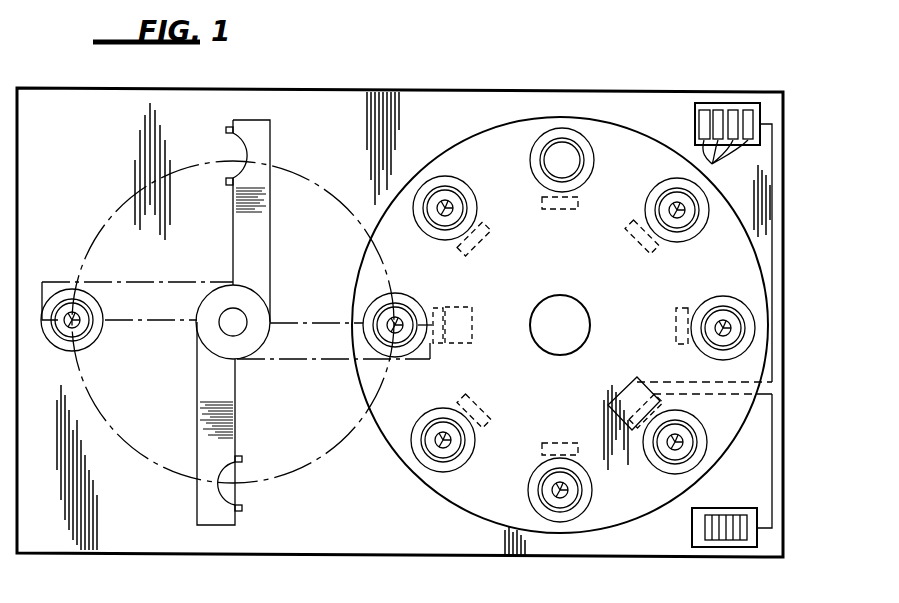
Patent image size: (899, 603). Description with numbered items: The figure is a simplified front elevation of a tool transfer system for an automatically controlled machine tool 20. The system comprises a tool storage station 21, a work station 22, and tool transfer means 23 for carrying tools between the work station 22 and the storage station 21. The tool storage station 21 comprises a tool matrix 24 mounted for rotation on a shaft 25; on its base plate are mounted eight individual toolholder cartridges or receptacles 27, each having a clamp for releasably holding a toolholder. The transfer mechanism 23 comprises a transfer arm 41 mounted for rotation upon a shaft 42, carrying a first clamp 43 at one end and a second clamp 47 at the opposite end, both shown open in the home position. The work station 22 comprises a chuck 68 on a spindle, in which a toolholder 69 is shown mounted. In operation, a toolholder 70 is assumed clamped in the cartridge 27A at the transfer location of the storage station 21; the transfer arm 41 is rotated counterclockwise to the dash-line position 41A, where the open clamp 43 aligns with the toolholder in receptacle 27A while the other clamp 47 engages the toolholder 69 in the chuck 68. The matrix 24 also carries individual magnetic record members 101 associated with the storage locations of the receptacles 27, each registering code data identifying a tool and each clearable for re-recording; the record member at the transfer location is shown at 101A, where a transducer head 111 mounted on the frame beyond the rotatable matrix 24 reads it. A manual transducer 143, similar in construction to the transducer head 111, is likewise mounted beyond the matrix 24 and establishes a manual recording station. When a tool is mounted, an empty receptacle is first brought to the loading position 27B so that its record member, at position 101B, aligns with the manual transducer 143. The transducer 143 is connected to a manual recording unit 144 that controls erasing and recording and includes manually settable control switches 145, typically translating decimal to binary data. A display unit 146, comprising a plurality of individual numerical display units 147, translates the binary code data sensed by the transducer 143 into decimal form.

The machine tool 20 is at (478, 82).
The tool storage station 21 is at (472, 520).
The work station 22 is at (30, 308).
The tool transfer means 23 is at (303, 465).
The tool matrix 24 is at (461, 505).
The shaft 25 is at (553, 352).
The toolholder cartridges 27 is at (541, 166).
The cartridge at transfer location 27A is at (393, 303).
The loading position of toolholder receptacle 27B is at (673, 470).
The transfer arm 41 is at (270, 225).
The transfer arm position 41A is at (137, 322).
The shaft 42 is at (243, 318).
The first clamp 43 is at (246, 148).
The second clamp 47 is at (228, 497).
The chuck 68 is at (92, 296).
The toolholder 69 is at (67, 332).
The toolholder 70 is at (396, 333).
The record members 101 is at (560, 211).
The record member position 101A is at (447, 306).
The record member position 101B is at (660, 401).
The transducer head 111 is at (473, 323).
The manual transducer 143 is at (608, 396).
The manual recording unit 144 is at (692, 527).
The manually settable control switches 145 is at (721, 541).
The display unit 146 is at (707, 103).
The numerical display units 147 is at (731, 161).